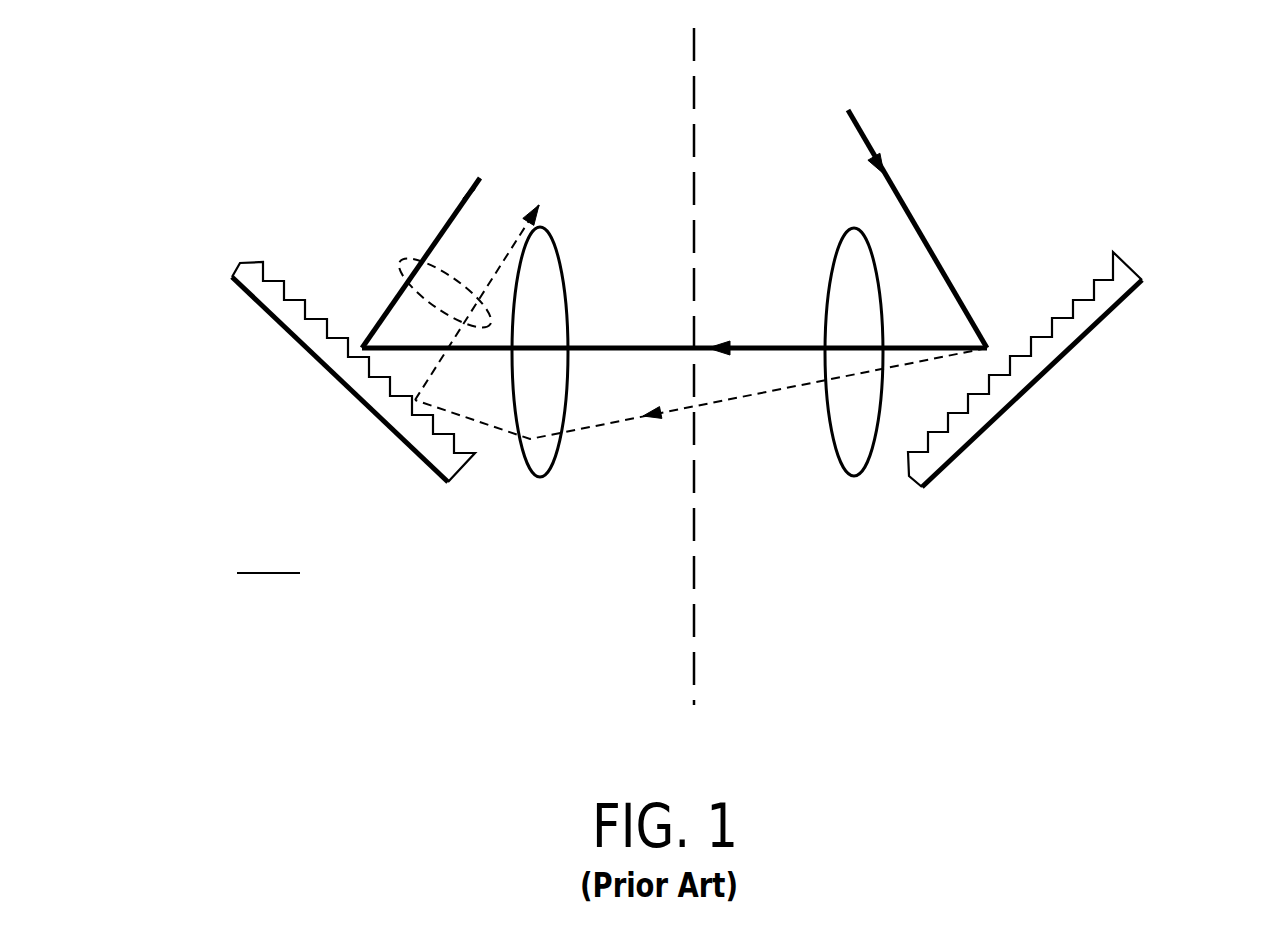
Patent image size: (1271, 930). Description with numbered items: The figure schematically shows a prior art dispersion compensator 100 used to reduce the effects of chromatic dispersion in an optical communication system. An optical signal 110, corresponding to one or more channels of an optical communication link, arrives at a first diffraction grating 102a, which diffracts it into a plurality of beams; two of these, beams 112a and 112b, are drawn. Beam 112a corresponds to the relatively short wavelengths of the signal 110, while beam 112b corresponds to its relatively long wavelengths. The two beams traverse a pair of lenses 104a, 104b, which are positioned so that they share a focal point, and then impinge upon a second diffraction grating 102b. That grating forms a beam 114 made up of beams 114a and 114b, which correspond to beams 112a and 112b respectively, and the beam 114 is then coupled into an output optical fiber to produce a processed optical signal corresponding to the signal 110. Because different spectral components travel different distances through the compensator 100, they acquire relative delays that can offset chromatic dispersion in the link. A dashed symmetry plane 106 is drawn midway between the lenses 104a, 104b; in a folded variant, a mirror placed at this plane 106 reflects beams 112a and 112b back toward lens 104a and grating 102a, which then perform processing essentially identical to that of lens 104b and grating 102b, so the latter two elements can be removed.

The dispersion compensator 100 is at (268, 557).
The first diffraction grating 102a is at (1085, 337).
The second diffraction grating 102b is at (253, 302).
The first lens 104a is at (855, 478).
The second lens 104b is at (560, 243).
The symmetry plane 106 is at (693, 600).
The optical signal 110 is at (918, 228).
The beam 112a is at (753, 347).
The beam 112b is at (723, 402).
The beam 114 is at (405, 263).
The beam 114a is at (453, 220).
The beam 114b is at (512, 247).